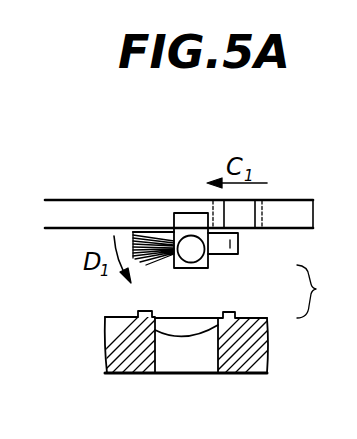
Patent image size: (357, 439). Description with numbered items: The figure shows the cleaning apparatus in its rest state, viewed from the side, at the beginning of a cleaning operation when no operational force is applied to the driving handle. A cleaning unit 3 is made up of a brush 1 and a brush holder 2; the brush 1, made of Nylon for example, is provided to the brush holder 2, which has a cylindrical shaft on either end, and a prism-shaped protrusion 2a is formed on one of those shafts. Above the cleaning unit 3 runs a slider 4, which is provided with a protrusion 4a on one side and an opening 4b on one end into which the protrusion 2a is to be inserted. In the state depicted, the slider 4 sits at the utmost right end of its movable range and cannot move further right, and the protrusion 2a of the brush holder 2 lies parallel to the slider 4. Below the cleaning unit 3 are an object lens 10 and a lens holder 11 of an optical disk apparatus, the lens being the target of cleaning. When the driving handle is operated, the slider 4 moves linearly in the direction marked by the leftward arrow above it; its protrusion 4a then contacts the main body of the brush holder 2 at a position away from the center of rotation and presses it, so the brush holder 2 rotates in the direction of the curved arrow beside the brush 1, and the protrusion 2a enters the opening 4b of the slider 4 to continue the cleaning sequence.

The brush 1 is at (153, 265).
The brush holder 2 is at (212, 265).
The prism-shaped protrusion 2a is at (242, 245).
The cleaning unit 3 is at (316, 291).
The slider 4 is at (68, 208).
The protrusion 4a is at (242, 208).
The opening 4b is at (213, 200).
The object lens 10 is at (173, 315).
The lens holder 11 is at (234, 376).